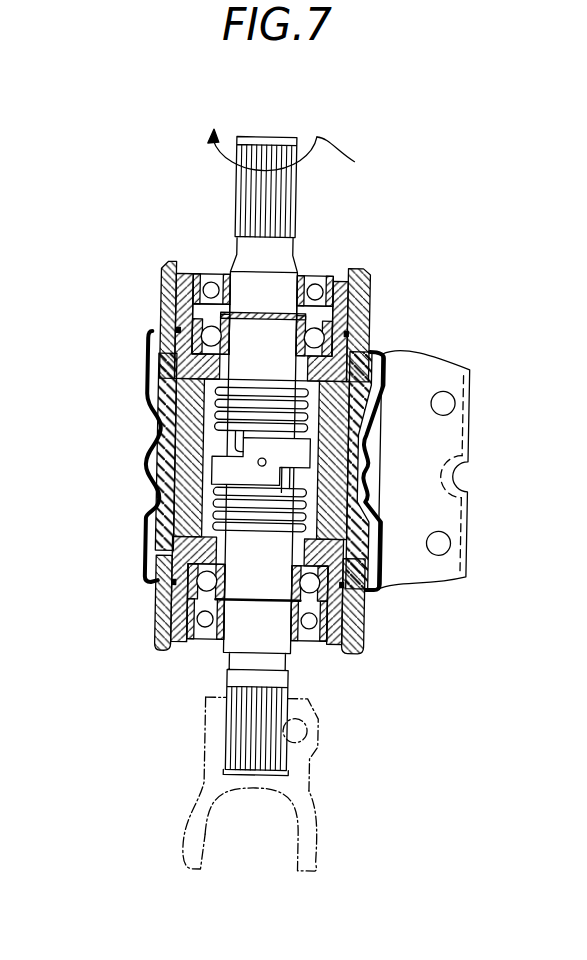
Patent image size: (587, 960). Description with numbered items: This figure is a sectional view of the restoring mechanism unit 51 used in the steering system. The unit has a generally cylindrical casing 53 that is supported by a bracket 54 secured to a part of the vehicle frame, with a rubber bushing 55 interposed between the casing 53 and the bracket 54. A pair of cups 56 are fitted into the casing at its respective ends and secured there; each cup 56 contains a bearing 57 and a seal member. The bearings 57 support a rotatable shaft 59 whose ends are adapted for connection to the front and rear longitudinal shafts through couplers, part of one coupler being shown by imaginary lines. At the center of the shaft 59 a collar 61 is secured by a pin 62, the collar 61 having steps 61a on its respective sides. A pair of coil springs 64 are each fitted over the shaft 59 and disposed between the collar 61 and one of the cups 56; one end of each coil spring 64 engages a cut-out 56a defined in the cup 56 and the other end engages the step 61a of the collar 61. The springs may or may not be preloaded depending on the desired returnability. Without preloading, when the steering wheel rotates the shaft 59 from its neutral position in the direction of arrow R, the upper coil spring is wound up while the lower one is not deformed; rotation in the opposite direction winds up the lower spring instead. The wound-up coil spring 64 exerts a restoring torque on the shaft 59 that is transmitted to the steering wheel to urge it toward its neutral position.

The restoring mechanism unit 51 is at (168, 211).
The casing 53 is at (161, 412).
The bracket 54 is at (426, 567).
The rubber bushing 55 is at (161, 489).
The cup 56 is at (340, 308).
The cut-out 56a is at (291, 373).
The bearing 57 is at (197, 306).
The shaft 59 is at (279, 284).
The collar 61 is at (223, 468).
The step 61a is at (240, 445).
The pin 62 is at (266, 462).
The coil spring 64 is at (339, 398).
The arrow R is at (288, 153).